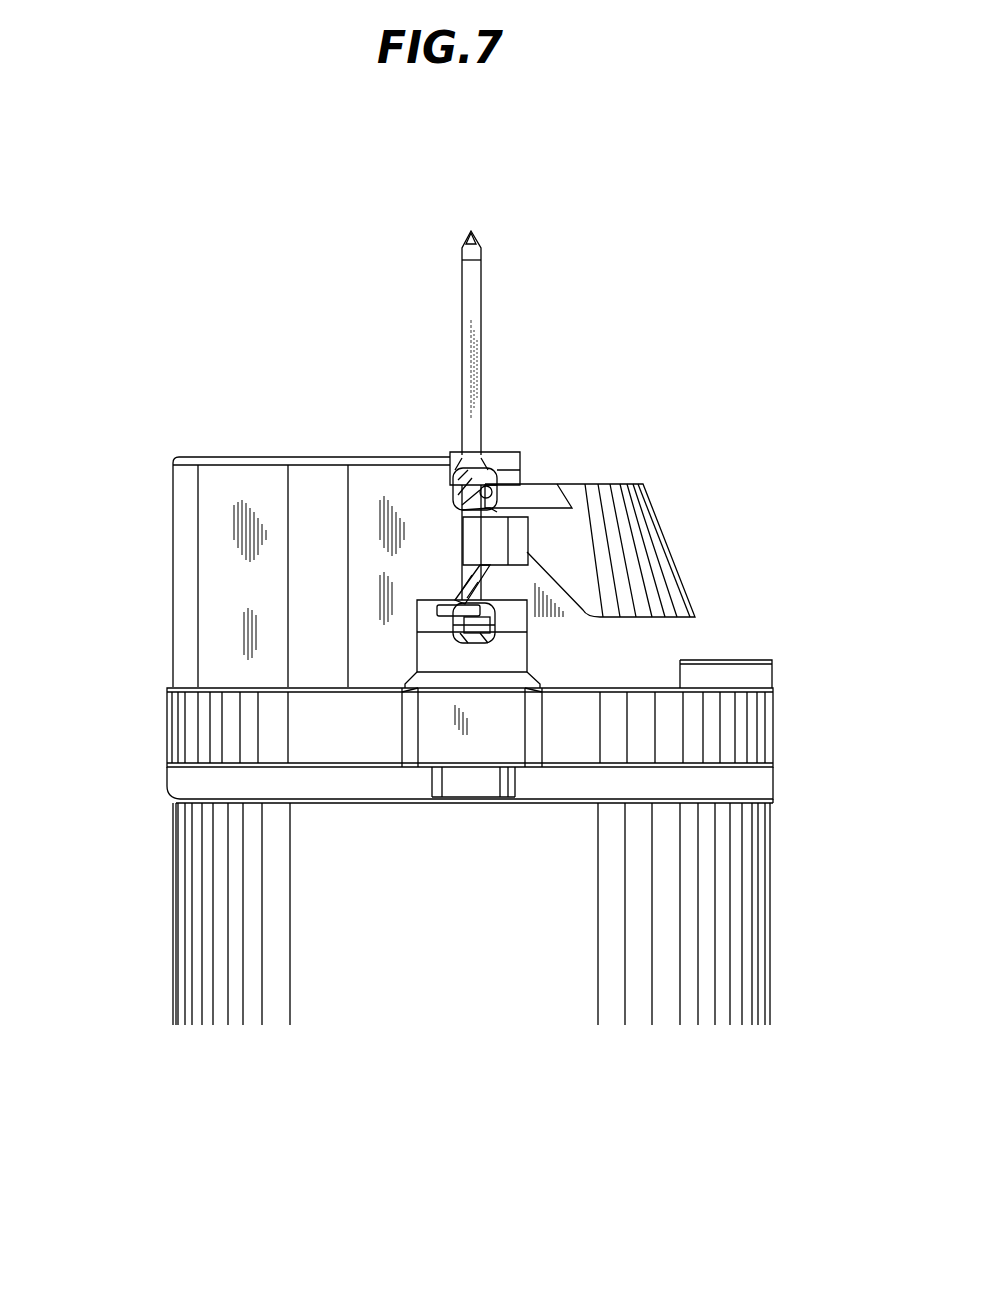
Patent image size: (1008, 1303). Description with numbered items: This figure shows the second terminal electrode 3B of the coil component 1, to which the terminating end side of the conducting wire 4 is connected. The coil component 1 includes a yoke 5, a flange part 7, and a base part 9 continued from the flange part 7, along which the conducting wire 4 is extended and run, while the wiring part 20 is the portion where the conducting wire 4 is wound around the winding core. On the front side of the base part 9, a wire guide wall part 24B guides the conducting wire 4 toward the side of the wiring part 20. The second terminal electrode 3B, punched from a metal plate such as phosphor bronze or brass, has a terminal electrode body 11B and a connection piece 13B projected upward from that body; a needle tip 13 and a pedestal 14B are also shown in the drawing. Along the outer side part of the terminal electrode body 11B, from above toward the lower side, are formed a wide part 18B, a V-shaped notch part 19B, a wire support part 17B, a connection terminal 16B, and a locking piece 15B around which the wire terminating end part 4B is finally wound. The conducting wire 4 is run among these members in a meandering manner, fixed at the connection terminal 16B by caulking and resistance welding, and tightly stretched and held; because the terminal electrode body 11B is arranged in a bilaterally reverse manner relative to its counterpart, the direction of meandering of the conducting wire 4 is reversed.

The coil component 1 is at (186, 327).
The second terminal electrode 3B is at (456, 404).
The conducting wire 4 is at (500, 470).
The wire terminating end part 4B is at (440, 608).
The yoke 5 is at (752, 731).
The flange part 7 is at (758, 786).
The base part 9 is at (165, 518).
The terminal electrode body 11B is at (460, 452).
The needle tip 13 is at (474, 243).
The connection piece 13B is at (463, 280).
The pedestal 14B is at (462, 578).
The locking piece 15B is at (568, 617).
The connection terminal 16B is at (518, 545).
The wire support part 17B is at (490, 490).
The wide part 18B is at (484, 452).
The V-shaped notch part 19B is at (485, 465).
The wiring part 20 is at (742, 897).
The wire guide wall part 24B is at (215, 492).